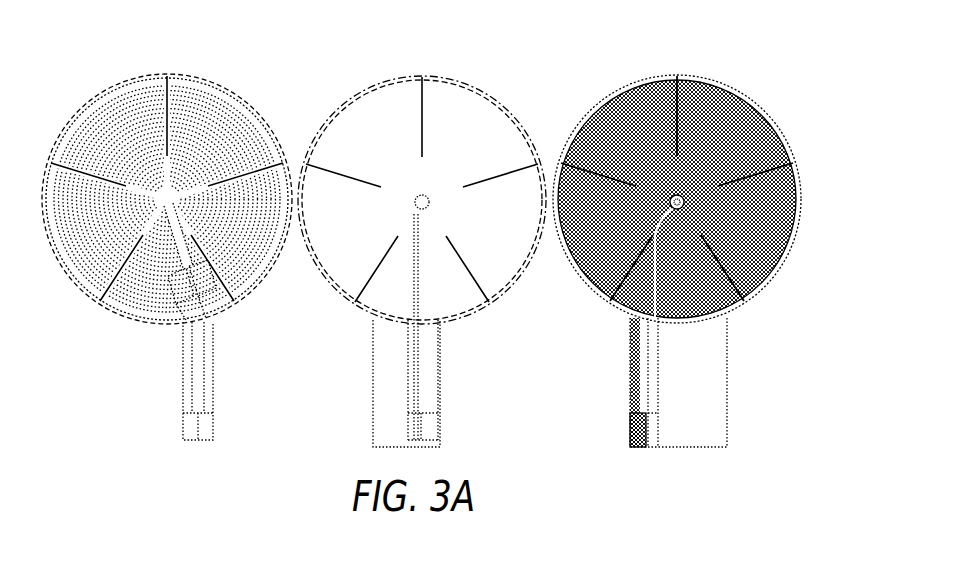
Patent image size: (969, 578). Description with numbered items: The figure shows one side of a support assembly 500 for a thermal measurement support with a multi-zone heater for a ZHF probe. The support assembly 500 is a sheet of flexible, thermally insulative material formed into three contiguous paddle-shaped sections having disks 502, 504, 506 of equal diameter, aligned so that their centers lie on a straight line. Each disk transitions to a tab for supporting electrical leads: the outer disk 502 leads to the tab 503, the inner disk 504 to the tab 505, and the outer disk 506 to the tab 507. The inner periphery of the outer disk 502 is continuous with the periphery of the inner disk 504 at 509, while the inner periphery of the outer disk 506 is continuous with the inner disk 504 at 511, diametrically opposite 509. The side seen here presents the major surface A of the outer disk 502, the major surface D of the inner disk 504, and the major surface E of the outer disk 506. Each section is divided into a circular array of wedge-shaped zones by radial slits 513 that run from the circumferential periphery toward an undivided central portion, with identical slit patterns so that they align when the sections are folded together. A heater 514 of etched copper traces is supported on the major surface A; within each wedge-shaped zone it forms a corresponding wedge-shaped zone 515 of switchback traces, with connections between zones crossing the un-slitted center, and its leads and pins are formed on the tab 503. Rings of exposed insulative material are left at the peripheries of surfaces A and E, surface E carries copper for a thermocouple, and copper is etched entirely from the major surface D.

The support assembly 500 is at (755, 88).
The outer disk 502 is at (100, 313).
The tab 503 is at (213, 368).
The inner disk 504 is at (443, 322).
The tab 505 is at (438, 373).
The outer disk 506 is at (768, 282).
The tab 507 is at (724, 393).
The junction point of disks 502 and 504 509 is at (296, 186).
The junction point of disks 504 and 506 511 is at (548, 185).
The radial slits 513 is at (78, 175).
The heater 514 is at (105, 70).
The wedge-shaped zone of the heater 515 is at (140, 313).
The major surface A is at (178, 70).
The major surface D is at (435, 65).
The major surface E is at (690, 70).